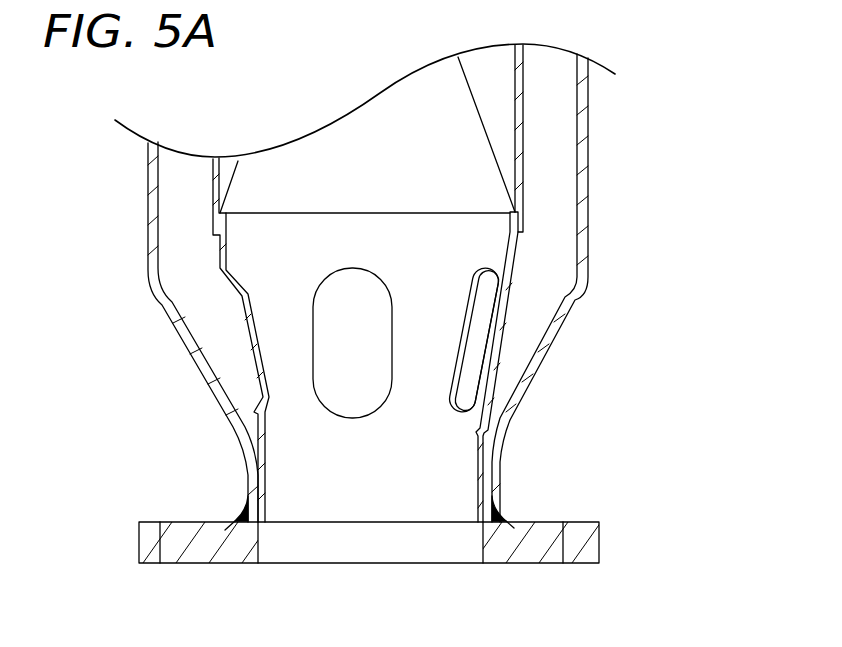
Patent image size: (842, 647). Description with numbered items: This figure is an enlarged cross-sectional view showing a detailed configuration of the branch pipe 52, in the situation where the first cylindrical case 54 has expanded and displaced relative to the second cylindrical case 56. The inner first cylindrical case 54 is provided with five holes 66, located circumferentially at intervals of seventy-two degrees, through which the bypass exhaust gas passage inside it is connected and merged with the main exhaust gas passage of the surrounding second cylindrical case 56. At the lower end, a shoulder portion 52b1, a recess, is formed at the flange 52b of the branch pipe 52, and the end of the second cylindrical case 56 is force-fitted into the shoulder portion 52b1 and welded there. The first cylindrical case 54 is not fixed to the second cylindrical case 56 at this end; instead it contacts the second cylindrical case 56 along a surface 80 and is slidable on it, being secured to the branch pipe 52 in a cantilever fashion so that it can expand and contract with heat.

The branch pipe 52 is at (598, 119).
The second cylindrical case 56 is at (588, 194).
The first cylindrical case 54 is at (513, 280).
The holes 66 is at (480, 308).
The surface 80 is at (477, 462).
The flange 52b is at (599, 527).
The shoulder portion 52b1 is at (483, 538).